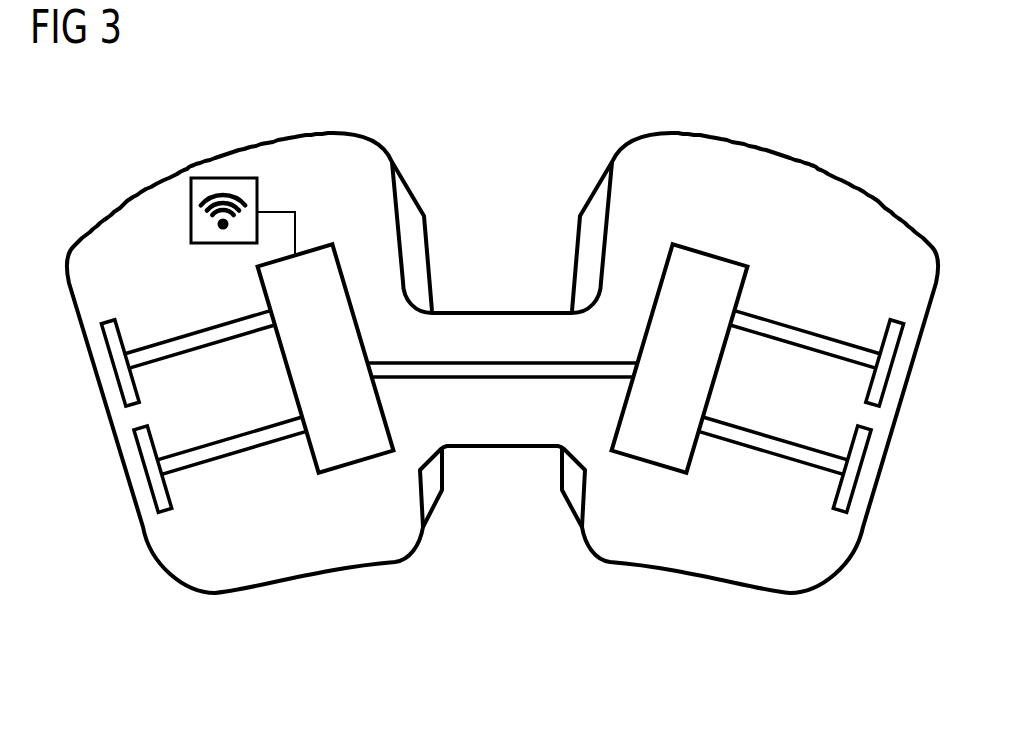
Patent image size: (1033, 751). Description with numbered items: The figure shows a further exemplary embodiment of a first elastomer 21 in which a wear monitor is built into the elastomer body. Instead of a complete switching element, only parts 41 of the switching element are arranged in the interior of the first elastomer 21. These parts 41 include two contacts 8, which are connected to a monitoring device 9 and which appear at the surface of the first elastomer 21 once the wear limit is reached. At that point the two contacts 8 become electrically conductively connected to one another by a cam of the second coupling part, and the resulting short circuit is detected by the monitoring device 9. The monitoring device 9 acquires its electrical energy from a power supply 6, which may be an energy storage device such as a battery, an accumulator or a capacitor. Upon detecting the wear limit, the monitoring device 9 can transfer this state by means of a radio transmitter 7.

The first elastomer 21 is at (138, 212).
The radio transmitter 7 is at (212, 178).
The monitoring device 9 is at (308, 248).
The power supply 6 is at (708, 252).
The contacts 8 is at (118, 376).
The parts of the switching element 41 is at (185, 305).